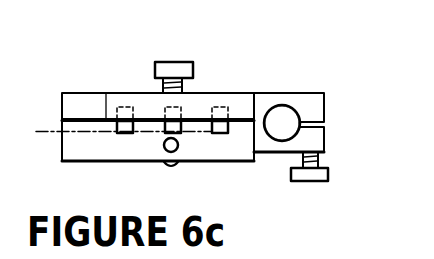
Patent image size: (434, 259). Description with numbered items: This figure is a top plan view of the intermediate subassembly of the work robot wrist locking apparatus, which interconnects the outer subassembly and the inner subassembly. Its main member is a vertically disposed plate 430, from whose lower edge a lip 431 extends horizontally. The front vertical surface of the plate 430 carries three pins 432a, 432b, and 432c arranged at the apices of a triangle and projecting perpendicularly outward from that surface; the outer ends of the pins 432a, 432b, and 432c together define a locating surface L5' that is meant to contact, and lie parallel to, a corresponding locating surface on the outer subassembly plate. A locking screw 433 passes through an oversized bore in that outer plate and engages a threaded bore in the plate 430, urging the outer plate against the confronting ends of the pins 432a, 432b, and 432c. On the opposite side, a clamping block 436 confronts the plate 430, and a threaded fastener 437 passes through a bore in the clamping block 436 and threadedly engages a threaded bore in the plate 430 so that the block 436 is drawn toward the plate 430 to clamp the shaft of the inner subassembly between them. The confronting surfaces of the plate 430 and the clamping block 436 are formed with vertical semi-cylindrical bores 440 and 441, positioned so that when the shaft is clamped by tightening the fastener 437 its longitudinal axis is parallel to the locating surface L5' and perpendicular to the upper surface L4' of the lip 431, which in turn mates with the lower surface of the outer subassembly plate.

The plate 430 is at (95, 102).
The lip 431 is at (200, 164).
The pin 432a is at (172, 123).
The pin 432b is at (124, 120).
The pin 432c is at (222, 119).
The locking screw 433 is at (184, 70).
The clamping block 436 is at (277, 153).
The threaded fastener 437 is at (328, 172).
The vertical semi-cylindrical bore 440 is at (284, 112).
The vertical semi-cylindrical bore 441 is at (268, 134).
The locating surface L4' is at (118, 178).
The locating surface L5' is at (47, 161).